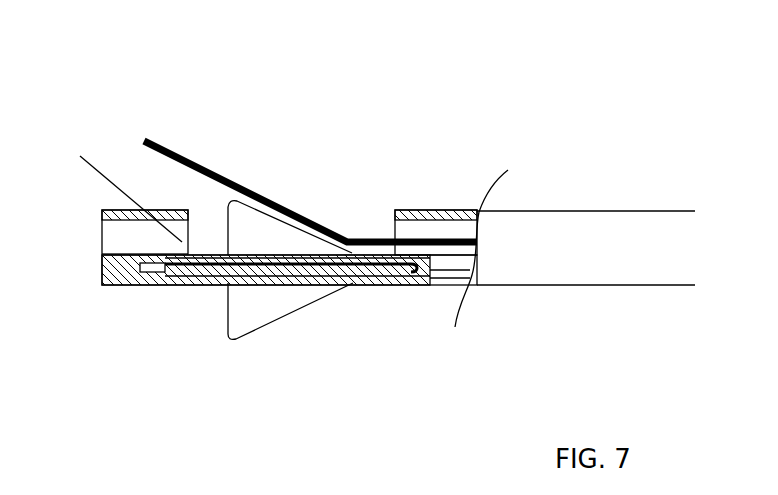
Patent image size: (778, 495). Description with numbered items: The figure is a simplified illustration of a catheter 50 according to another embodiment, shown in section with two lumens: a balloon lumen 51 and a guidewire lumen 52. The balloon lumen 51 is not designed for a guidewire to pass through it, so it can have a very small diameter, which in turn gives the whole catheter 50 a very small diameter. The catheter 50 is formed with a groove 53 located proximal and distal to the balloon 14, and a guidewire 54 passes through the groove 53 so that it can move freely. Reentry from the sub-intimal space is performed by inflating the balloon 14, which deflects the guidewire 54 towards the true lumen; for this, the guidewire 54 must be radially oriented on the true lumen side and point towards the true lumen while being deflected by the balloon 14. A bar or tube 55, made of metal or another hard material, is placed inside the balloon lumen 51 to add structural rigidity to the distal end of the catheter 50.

The balloon 14 is at (275, 310).
The catheter 50 is at (588, 263).
The balloon lumen 51 is at (423, 263).
The guidewire lumen 52 is at (435, 228).
The groove 53 is at (215, 220).
The guidewire 54 is at (207, 163).
The bar or tube 55 is at (382, 287).